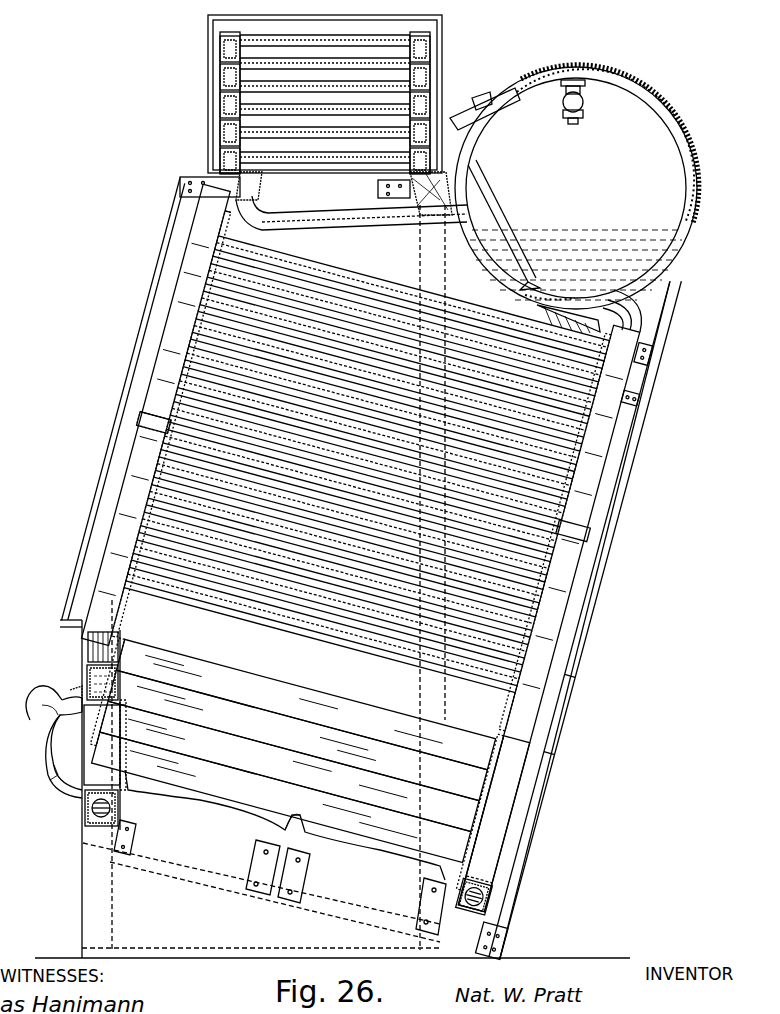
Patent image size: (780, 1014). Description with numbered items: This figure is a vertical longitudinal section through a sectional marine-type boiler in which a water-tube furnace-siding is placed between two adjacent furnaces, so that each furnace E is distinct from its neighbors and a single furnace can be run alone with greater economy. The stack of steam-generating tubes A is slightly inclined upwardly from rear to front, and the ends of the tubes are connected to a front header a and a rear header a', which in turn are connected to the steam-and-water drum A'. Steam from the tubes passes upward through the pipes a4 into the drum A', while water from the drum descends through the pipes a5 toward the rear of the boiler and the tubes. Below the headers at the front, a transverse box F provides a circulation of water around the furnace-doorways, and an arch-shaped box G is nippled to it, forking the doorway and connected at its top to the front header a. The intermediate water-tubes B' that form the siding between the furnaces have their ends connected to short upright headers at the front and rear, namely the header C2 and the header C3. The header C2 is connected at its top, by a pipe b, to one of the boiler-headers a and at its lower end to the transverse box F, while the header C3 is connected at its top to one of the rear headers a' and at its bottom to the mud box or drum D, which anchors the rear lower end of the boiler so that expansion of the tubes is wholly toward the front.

The front header a is at (147, 412).
The rear header a' is at (548, 618).
The steam-generating tubes A is at (366, 464).
The steam-and-water drum A' is at (575, 187).
The pipes connecting front box to drum a4 is at (351, 225).
The pipes connecting rear box to drum a5 is at (634, 309).
The pipe b is at (100, 648).
The arch-shaped box G is at (87, 682).
The short upright front header C2 is at (105, 745).
The transverse box F is at (85, 812).
The water-tubes B' is at (291, 750).
The furnace E is at (285, 825).
The short upright rear header C3 is at (491, 823).
The mud box or drum D is at (474, 896).